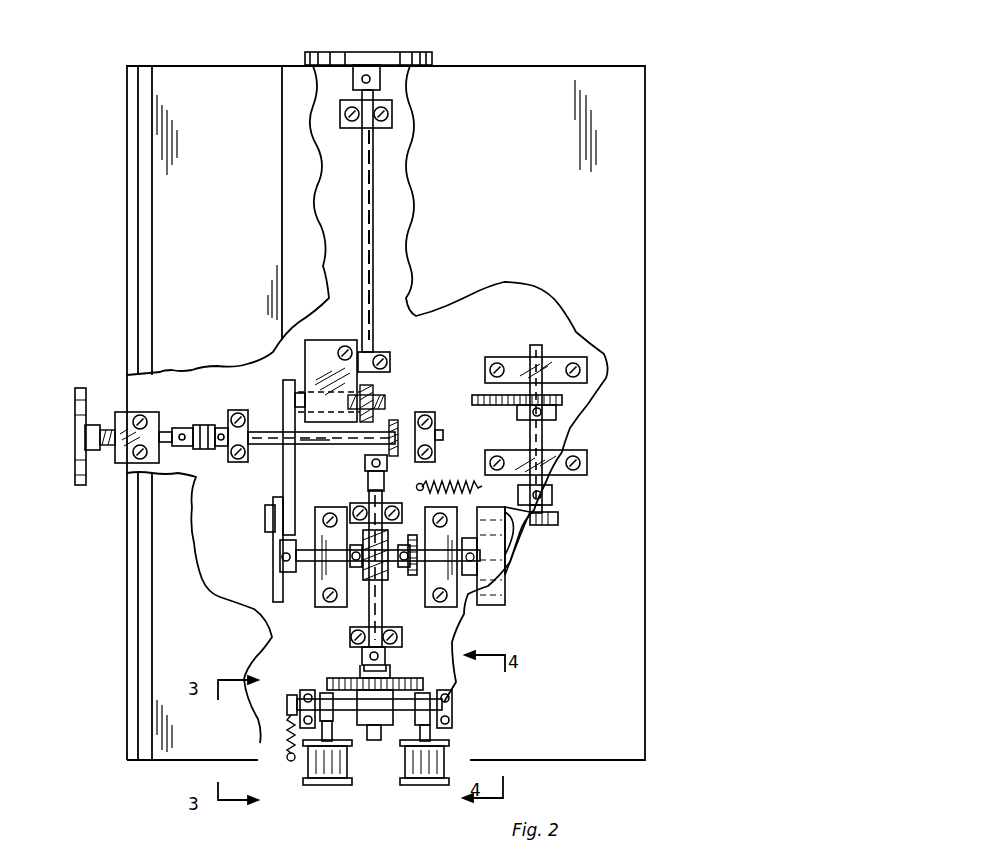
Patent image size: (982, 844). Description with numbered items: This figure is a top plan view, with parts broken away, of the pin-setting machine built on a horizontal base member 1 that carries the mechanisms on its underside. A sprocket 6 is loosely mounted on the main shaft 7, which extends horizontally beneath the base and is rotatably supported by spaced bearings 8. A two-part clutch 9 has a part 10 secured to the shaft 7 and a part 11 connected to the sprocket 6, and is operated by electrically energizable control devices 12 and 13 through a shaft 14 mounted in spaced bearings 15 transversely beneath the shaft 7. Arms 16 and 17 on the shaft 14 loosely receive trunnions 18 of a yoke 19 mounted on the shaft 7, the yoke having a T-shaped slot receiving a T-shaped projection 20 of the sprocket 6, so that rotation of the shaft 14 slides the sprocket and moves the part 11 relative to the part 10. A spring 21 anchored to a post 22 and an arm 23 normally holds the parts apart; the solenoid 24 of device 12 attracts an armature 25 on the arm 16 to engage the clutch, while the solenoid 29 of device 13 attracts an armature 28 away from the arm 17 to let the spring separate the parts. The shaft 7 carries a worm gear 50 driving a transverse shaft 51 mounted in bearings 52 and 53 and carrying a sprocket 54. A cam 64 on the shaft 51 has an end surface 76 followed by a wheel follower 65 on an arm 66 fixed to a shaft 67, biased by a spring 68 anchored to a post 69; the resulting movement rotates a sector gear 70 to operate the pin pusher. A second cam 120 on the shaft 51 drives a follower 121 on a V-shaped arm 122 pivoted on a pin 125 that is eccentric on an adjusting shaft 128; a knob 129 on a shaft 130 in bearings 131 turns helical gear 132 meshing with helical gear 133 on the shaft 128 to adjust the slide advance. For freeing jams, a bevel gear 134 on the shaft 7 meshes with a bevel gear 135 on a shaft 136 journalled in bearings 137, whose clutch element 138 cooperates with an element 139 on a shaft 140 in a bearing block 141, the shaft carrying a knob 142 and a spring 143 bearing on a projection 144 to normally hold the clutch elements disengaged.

The base member 1 is at (640, 203).
The sprocket 6 is at (424, 692).
The main shaft 7 is at (368, 610).
The bearings 8 is at (352, 502).
The clutch 9 is at (360, 668).
The clutch part 10 is at (390, 662).
The clutch part 11 is at (392, 676).
The control device 12 is at (338, 811).
The control device 13 is at (434, 811).
The shaft 14 is at (446, 690).
The bearings 15 is at (300, 690).
The arm 16 is at (324, 692).
The arm 17 is at (414, 718).
The trunnions 18 is at (332, 724).
The yoke 19 is at (394, 738).
The T-shaped projection 20 is at (375, 707).
The spring 21 is at (288, 732).
The post 22 is at (290, 762).
The arm 23 is at (286, 698).
The solenoid 24 is at (304, 778).
The armature 25 is at (333, 744).
The armature 28 is at (430, 730).
The solenoid 29 is at (402, 774).
The worm gear 50 is at (384, 566).
The shaft 51 is at (302, 562).
The bearing 52 is at (335, 608).
The bearing 53 is at (442, 606).
The sprocket 54 is at (412, 534).
The cam 64 is at (494, 606).
The follower 65 is at (554, 516).
The arm 66 is at (552, 492).
The shaft 67 is at (543, 438).
The spring 68 is at (474, 480).
The post 69 is at (418, 484).
The sector gear 70 is at (474, 394).
The cam surface 76 is at (508, 506).
The cam 120 is at (272, 588).
The cam follower 121 is at (264, 516).
The arm 122 is at (287, 470).
The pin 125 is at (276, 400).
The shaft 128 is at (330, 342).
The knob 129 is at (388, 56).
The shaft 130 is at (372, 252).
The bearings 131 is at (382, 128).
The helical gear 132 is at (391, 395).
The helical gear 133 is at (390, 376).
The bevel gear 134 is at (360, 460).
The bevel gear 135 is at (396, 420).
The shaft 136 is at (299, 442).
The bearings 137 is at (432, 424).
The clutch element 138 is at (204, 424).
The clutch element 139 is at (218, 446).
The shaft 140 is at (174, 426).
The bearing block 141 is at (124, 412).
The knob 142 is at (74, 474).
The spring 143 is at (110, 428).
The projection 144 is at (94, 452).